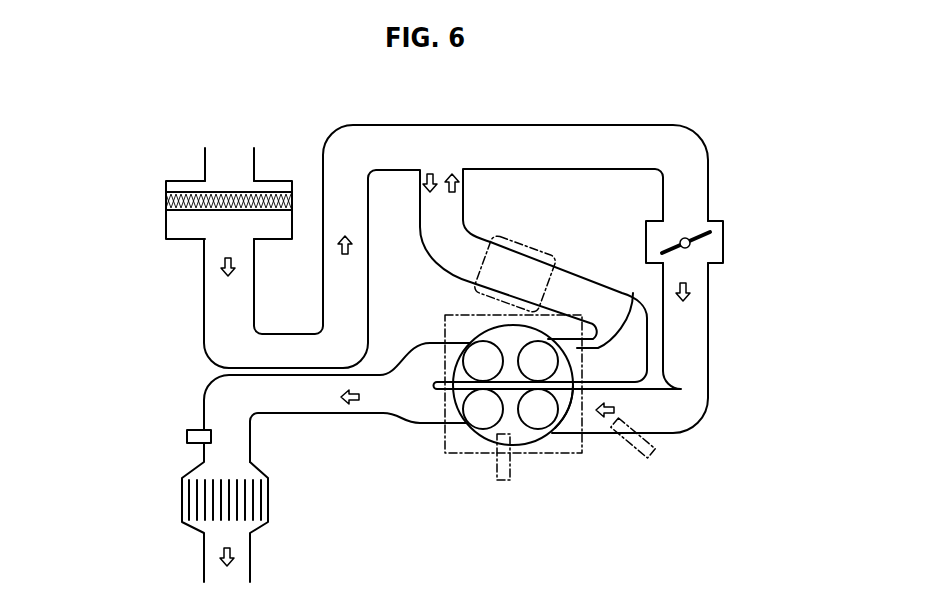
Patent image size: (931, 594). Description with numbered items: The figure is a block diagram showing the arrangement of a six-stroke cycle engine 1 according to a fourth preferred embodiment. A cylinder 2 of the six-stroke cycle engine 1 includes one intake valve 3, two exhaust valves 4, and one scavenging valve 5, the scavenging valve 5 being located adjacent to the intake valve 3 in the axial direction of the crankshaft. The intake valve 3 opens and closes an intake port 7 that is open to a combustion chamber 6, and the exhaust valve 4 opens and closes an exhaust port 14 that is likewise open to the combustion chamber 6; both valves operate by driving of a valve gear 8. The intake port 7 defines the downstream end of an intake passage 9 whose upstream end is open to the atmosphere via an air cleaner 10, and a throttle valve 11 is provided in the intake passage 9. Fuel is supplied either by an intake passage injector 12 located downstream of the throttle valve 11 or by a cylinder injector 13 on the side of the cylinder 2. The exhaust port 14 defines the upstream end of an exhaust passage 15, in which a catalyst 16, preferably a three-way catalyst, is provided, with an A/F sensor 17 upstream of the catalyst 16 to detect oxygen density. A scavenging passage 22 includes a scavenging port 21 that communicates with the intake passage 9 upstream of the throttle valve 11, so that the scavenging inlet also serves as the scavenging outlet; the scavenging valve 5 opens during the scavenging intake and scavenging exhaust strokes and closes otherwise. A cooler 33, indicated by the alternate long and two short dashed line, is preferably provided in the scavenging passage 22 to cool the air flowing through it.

The six-stroke cycle engine 1 is at (118, 141).
The cylinder 2 is at (476, 432).
The intake valve 3 is at (540, 428).
The exhaust valve 4 is at (472, 412).
The scavenging valve 5 is at (538, 355).
The combustion chamber 6 is at (535, 412).
The intake port 7 is at (567, 428).
The valve gear 8 is at (483, 457).
The intake passage 9 is at (690, 187).
The air cleaner 10 is at (166, 213).
The throttle valve 11 is at (700, 240).
The intake passage injector 12 is at (648, 455).
The cylinder injector 13 is at (501, 483).
The exhaust port 14 is at (445, 353).
The exhaust passage 15 is at (316, 398).
The catalyst 16 is at (197, 500).
The A/F sensor 17 is at (187, 435).
The scavenging port 21 is at (633, 293).
The scavenging passage 22 is at (438, 228).
The cooler 33 is at (523, 242).